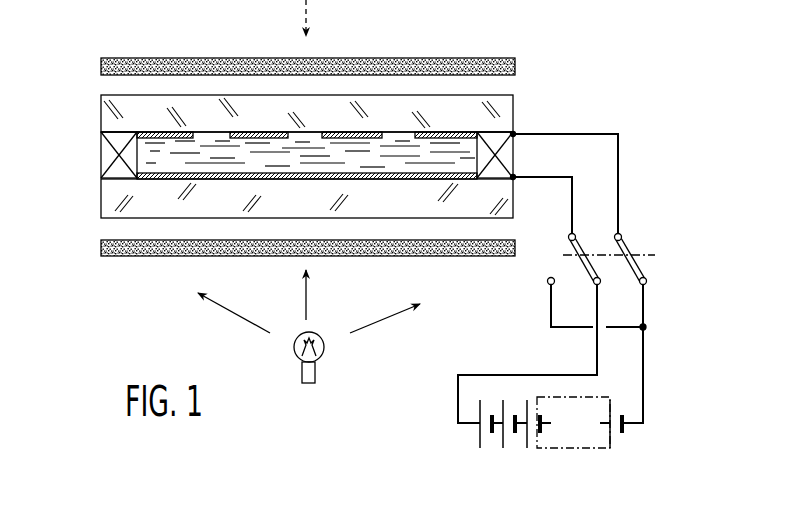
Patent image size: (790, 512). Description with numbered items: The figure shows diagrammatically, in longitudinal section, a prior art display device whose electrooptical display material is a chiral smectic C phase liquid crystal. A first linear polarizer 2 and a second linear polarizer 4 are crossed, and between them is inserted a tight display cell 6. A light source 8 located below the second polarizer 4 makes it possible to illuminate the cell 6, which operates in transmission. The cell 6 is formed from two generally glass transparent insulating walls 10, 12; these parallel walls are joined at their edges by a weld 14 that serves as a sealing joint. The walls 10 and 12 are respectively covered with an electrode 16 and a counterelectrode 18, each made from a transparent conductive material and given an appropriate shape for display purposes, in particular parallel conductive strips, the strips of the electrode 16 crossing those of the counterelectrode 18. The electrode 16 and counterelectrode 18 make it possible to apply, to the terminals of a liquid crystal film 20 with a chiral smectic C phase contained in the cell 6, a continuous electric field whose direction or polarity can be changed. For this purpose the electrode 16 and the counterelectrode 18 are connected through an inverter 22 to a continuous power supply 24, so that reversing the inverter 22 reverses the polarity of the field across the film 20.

The first linear polarizer 2 is at (382, 65).
The second linear polarizer 4 is at (107, 243).
The display cell 6 is at (84, 97).
The light source 8 is at (313, 370).
The transparent insulating wall 10 is at (508, 105).
The transparent insulating wall 12 is at (428, 205).
The weld 14 is at (118, 137).
The electrode 16 is at (194, 131).
The counterelectrode 18 is at (221, 179).
The liquid crystal film 20 is at (457, 157).
The inverter 22 is at (637, 243).
The continuous power supply 24 is at (578, 456).